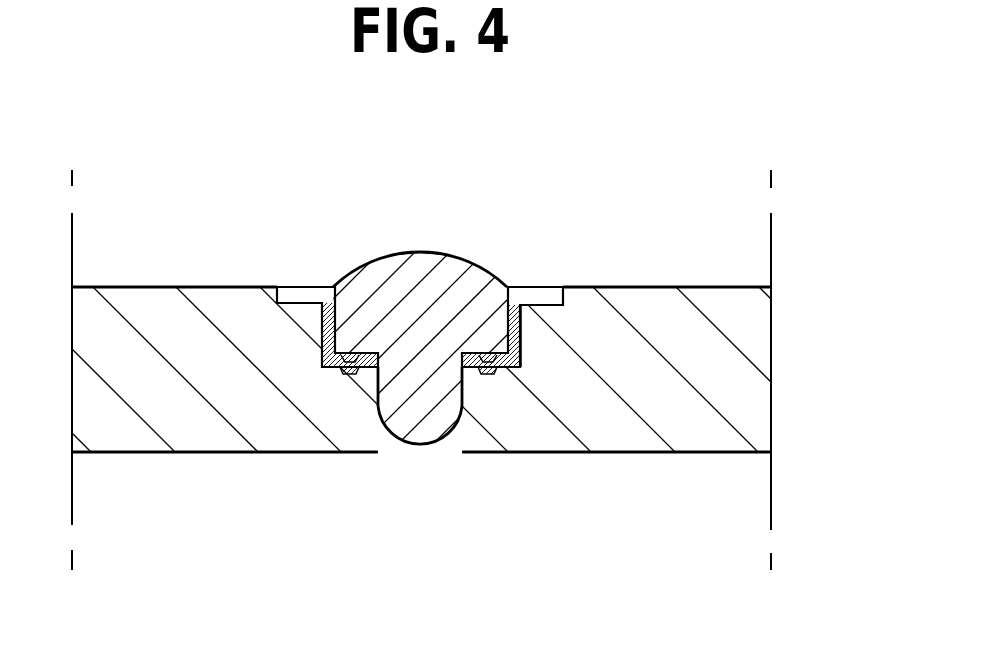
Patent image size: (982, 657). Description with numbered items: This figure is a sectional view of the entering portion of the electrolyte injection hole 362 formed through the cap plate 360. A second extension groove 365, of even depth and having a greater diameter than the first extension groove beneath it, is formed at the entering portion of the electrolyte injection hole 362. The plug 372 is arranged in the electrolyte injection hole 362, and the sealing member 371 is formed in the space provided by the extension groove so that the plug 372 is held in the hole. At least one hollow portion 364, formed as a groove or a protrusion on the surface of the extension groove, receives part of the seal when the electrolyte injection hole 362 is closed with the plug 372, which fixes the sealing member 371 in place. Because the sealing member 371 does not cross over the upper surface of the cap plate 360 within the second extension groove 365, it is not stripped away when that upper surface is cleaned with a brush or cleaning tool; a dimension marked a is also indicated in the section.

The cap plate 360 is at (668, 310).
The electrolyte injection hole 362 is at (450, 457).
The hollow portion 364 is at (350, 368).
The second extension groove 365 is at (312, 297).
The sealing member 371 is at (523, 345).
The plug 372 is at (427, 252).
The gap a is at (338, 367).